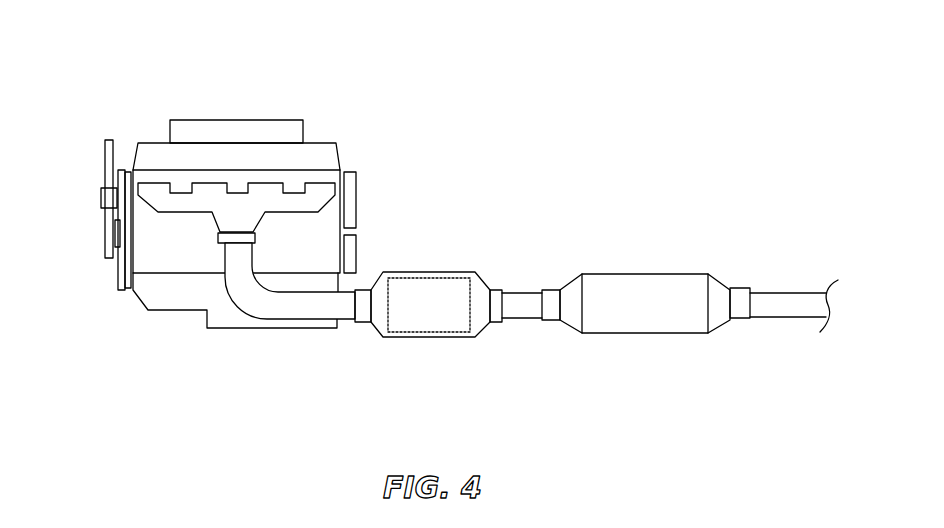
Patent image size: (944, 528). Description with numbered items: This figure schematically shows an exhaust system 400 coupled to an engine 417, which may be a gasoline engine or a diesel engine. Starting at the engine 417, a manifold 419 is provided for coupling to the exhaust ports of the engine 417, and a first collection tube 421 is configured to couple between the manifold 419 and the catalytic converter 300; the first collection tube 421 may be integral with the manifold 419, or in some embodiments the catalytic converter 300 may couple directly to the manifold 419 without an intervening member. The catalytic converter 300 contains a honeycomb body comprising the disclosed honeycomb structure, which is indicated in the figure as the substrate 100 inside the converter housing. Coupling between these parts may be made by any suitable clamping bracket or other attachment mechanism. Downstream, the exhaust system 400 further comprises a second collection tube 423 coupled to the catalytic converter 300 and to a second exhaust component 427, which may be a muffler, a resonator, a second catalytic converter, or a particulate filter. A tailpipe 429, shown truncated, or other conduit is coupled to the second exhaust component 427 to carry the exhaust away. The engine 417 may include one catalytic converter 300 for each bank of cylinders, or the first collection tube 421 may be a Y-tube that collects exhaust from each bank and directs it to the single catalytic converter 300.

The exhaust system 400 is at (469, 230).
The engine 417 is at (228, 200).
The manifold 419 is at (213, 213).
The first collection tube 421 is at (247, 312).
The catalytic converter 300 is at (428, 309).
The catalyst substrate 100 is at (431, 347).
The second collection tube 423 is at (527, 319).
The second exhaust component 427 is at (648, 263).
The tailpipe 429 is at (781, 318).